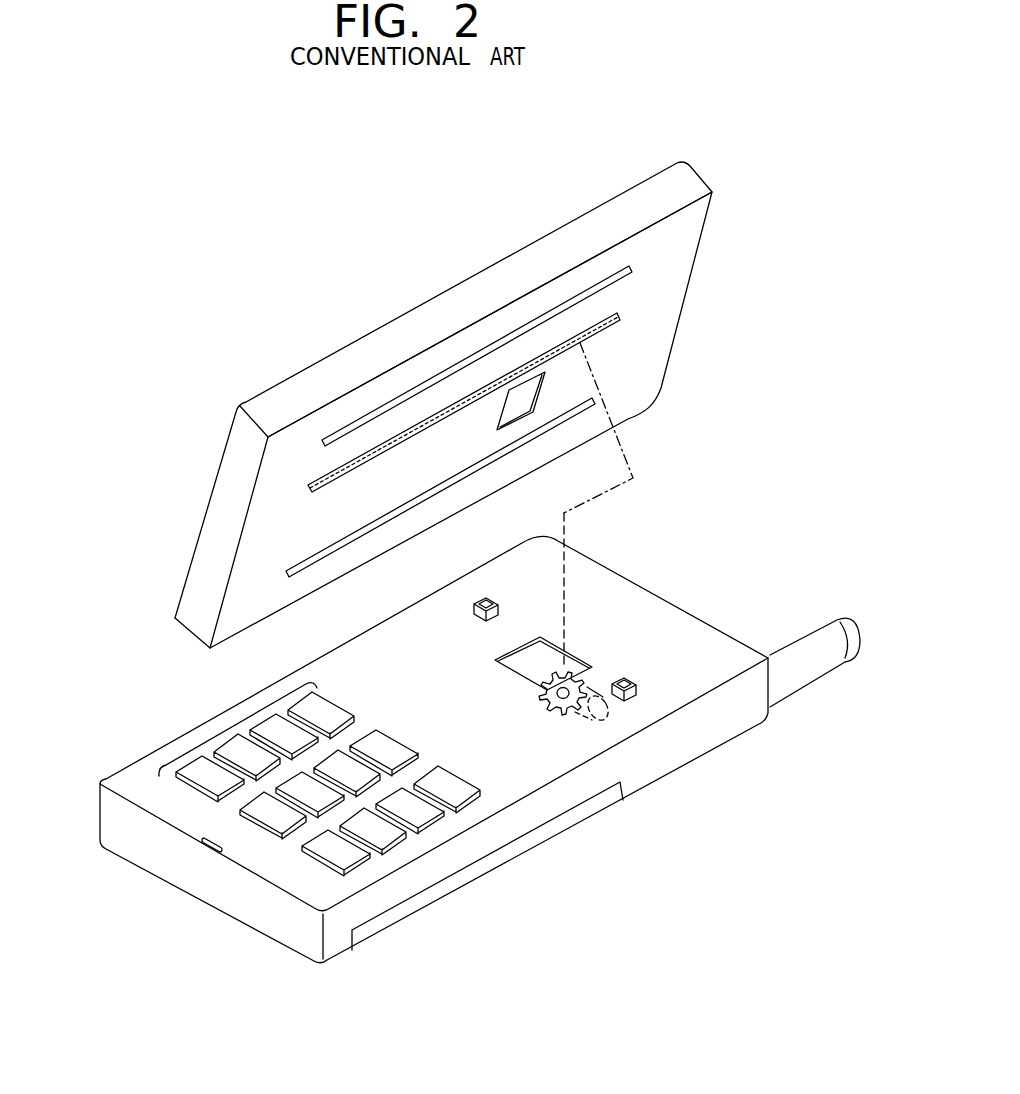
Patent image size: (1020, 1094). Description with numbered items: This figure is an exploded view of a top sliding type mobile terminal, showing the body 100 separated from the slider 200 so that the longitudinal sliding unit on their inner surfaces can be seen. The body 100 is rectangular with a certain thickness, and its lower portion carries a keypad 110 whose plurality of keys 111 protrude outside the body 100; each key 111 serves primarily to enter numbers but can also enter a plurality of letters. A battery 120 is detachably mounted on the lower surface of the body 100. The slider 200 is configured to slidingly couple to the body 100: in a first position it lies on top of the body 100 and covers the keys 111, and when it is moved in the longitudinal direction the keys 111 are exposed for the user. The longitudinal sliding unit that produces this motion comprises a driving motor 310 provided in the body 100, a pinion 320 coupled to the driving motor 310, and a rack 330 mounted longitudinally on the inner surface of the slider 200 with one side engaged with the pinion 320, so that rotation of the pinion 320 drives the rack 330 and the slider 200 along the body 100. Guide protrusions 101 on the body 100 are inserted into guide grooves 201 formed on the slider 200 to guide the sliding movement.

The body 100 is at (122, 764).
The guide protrusions 101 is at (491, 600).
The keypad 110 is at (231, 714).
The keys 111 is at (428, 813).
The battery 120 is at (522, 845).
The slider 200 is at (395, 309).
The guide grooves 201 is at (613, 282).
The driving motor 310 is at (595, 692).
The pinion 320 is at (578, 676).
The rack 330 is at (612, 327).